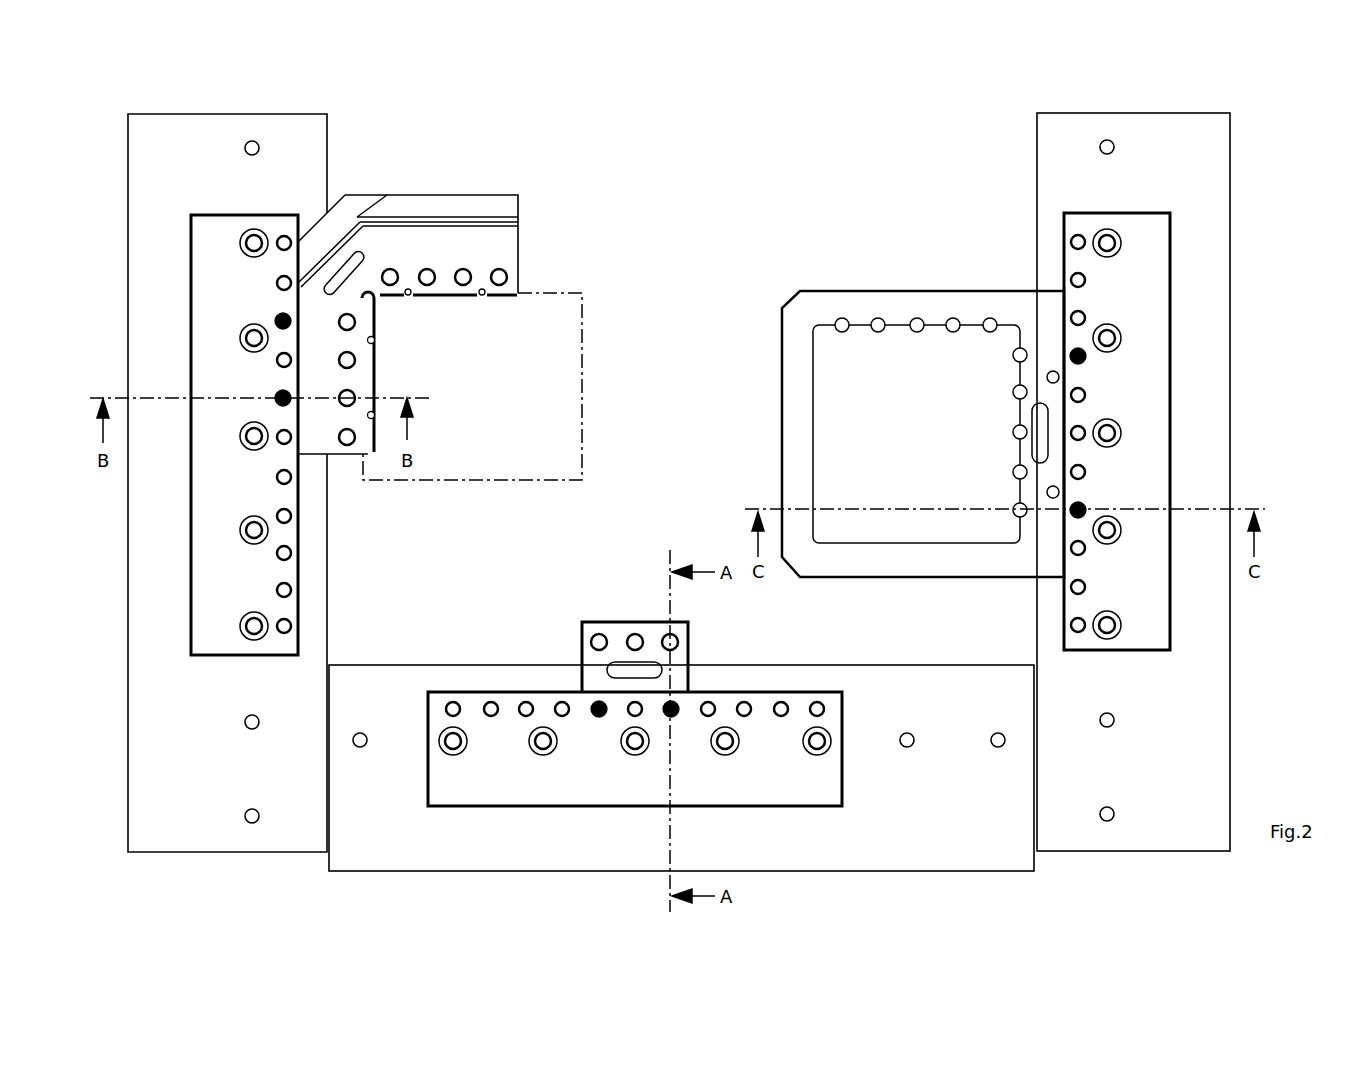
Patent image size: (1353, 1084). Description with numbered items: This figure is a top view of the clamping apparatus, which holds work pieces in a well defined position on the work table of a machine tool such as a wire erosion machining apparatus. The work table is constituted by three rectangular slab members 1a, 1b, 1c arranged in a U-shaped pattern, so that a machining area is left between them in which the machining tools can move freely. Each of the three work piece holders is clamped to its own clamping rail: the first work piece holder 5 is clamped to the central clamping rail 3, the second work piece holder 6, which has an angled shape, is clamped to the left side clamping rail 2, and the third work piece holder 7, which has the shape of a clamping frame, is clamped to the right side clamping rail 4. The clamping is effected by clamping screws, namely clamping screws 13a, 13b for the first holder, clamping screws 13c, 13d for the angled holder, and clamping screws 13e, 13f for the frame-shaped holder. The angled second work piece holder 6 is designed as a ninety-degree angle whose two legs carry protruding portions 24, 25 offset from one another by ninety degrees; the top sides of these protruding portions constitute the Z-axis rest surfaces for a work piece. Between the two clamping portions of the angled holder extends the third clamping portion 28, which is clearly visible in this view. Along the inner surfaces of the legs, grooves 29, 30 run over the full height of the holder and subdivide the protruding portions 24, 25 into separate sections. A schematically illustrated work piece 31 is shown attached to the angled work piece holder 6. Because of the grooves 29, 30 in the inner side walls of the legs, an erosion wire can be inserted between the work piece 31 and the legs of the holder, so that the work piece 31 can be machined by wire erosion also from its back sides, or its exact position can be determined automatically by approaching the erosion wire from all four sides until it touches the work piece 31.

The slab member 1a is at (167, 842).
The slab member 1b is at (388, 858).
The slab member 1c is at (1162, 835).
The left side clamping rail 2 is at (213, 533).
The central clamping rail 3 is at (538, 792).
The right side clamping rail 4 is at (1162, 573).
The first work piece holder 5 is at (587, 643).
The second work piece holder 6 is at (505, 247).
The third work piece holder 7 is at (953, 560).
The clamping screw 13a is at (600, 713).
The clamping screw 13b is at (672, 713).
The clamping screw 13c is at (277, 393).
The clamping screw 13d is at (280, 318).
The clamping screw 13e is at (1085, 507).
The clamping screw 13f is at (1083, 358).
The protruding portion 24 is at (372, 370).
The protruding portion 25 is at (443, 298).
The third clamping portion 28 is at (327, 228).
The groove 29 is at (364, 340).
The groove 30 is at (408, 289).
The work piece 31 is at (560, 337).